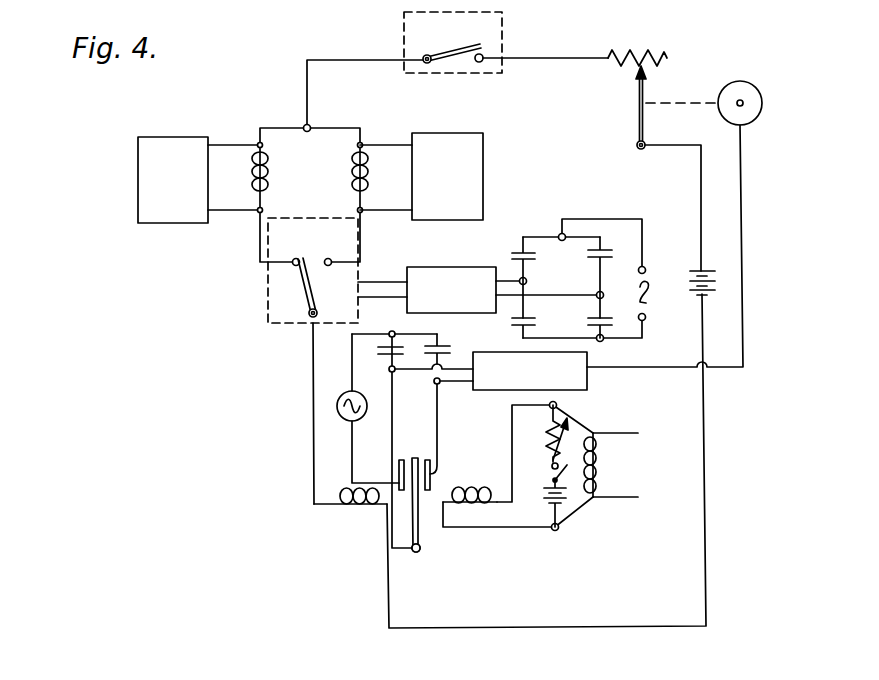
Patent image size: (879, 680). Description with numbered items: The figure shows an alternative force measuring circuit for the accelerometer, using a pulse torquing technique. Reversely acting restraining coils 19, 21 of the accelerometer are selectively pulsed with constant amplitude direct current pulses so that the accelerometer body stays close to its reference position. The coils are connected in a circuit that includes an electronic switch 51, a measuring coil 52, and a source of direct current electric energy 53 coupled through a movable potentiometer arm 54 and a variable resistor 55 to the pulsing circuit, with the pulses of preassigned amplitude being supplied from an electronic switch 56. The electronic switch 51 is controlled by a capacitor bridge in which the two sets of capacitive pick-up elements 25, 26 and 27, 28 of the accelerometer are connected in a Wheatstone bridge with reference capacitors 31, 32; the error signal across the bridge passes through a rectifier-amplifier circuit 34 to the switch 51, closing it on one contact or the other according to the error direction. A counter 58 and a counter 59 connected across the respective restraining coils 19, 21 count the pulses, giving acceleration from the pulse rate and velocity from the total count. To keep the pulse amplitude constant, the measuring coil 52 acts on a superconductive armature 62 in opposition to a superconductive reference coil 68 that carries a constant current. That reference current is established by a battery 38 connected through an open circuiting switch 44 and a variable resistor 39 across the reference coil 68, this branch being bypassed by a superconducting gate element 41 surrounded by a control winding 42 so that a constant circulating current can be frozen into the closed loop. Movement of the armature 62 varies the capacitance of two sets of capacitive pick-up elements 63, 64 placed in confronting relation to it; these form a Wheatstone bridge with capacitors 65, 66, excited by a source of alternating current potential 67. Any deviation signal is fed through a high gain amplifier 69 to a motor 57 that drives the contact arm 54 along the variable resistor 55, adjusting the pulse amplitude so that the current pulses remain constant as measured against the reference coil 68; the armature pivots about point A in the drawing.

The restraining coil 19 is at (368, 183).
The restraining coil 21 is at (252, 183).
The capacitive pick-up element 25 is at (621, 258).
The capacitive pick-up element 26 is at (612, 243).
The capacitive pick-up element 27 is at (530, 259).
The capacitive pick-up element 28 is at (514, 238).
The reference capacitor 31 is at (528, 320).
The reference capacitor 32 is at (593, 320).
The rectifier-amplifier circuit 34 is at (443, 267).
The battery 38 is at (546, 503).
The variable resistor 39 is at (551, 432).
The superconducting gate element 41 is at (585, 423).
The control winding 42 is at (598, 467).
The open circuiting switch 44 is at (551, 466).
The electronic switch 51 is at (307, 298).
The measuring coil 52 is at (361, 510).
The source of direct current electric energy 53 is at (690, 284).
The movable potentiometer arm 54 is at (645, 87).
The variable resistor 55 is at (637, 55).
The electronic switch 56 is at (502, 38).
The motor 57 is at (737, 82).
The counter 58 is at (441, 140).
The counter 59 is at (163, 140).
The superconductive armature 62 is at (415, 458).
The capacitive pick-up element 63 is at (436, 474).
The capacitive pick-up element 64 is at (398, 477).
The capacitor 65 is at (385, 364).
The capacitor 66 is at (449, 345).
The source of alternating current potential 67 is at (344, 419).
The reference coil 68 is at (478, 492).
The high gain amplifier 69 is at (587, 384).
The pivot point A is at (423, 550).